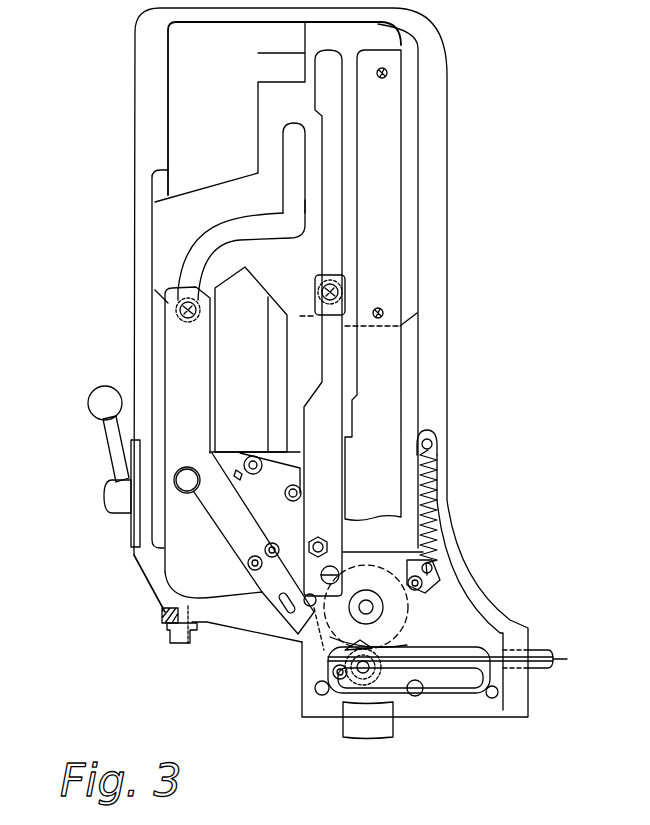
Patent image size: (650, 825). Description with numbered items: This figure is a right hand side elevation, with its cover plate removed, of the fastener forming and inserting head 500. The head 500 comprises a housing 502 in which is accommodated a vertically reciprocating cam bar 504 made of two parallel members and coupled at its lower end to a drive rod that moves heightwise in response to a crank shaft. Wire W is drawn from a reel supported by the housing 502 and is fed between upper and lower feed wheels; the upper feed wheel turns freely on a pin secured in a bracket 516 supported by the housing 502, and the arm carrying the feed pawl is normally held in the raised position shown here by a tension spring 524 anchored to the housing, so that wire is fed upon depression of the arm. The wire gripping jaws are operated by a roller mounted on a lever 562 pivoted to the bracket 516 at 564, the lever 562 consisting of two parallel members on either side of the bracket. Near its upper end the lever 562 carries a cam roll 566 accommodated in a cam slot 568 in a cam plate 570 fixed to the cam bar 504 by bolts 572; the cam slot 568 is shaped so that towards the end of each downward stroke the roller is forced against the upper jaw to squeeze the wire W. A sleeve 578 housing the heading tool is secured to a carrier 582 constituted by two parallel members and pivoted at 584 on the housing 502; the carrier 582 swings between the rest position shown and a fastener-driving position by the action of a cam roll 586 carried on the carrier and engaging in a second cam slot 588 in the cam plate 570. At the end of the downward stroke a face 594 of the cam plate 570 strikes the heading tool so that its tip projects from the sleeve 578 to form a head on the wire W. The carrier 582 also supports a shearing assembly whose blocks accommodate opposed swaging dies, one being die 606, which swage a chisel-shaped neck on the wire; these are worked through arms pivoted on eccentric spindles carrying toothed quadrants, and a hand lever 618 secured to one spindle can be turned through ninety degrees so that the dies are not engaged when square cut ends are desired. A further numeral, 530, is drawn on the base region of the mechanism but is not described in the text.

The fastener forming and inserting head 500 is at (112, 229).
The housing 502 is at (452, 166).
The cam bar 504 is at (399, 371).
The bracket 516 is at (349, 561).
The tension spring 524 is at (438, 472).
The pivot pin 530 is at (336, 670).
The lever 562 is at (347, 438).
The pivot 564 is at (323, 540).
The cam roll 566 is at (347, 284).
The cam slot 568 is at (337, 157).
The cam plate 570 is at (262, 140).
The bolts 572 is at (383, 80).
The sleeve 578 is at (263, 488).
The carrier 582 is at (207, 408).
The pivot 584 is at (185, 494).
The cam roll 586 is at (200, 325).
The cam slot 588 is at (236, 221).
The face 594 is at (251, 359).
The swaging die 606 is at (248, 574).
The hand lever 618 is at (111, 460).
The wire W is at (457, 674).